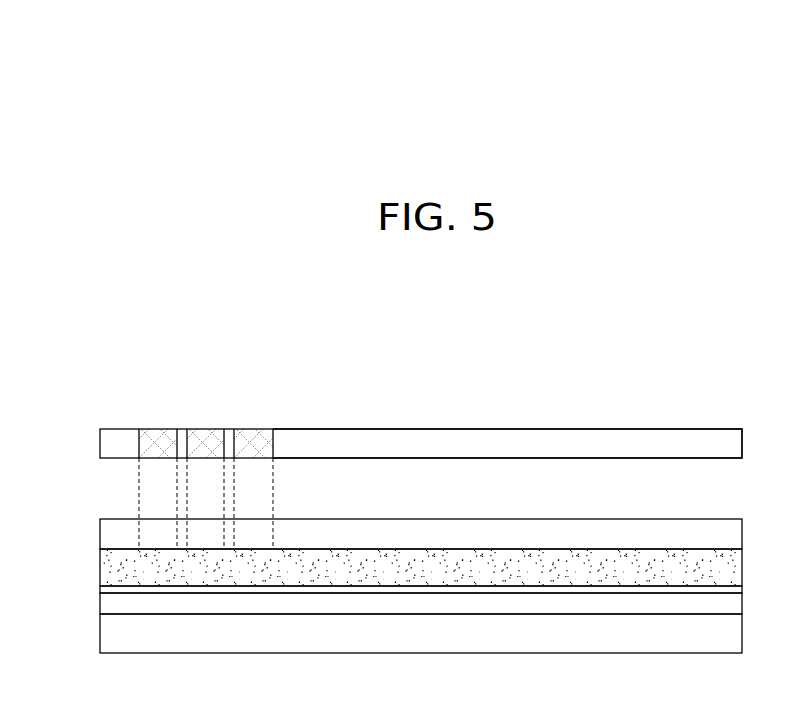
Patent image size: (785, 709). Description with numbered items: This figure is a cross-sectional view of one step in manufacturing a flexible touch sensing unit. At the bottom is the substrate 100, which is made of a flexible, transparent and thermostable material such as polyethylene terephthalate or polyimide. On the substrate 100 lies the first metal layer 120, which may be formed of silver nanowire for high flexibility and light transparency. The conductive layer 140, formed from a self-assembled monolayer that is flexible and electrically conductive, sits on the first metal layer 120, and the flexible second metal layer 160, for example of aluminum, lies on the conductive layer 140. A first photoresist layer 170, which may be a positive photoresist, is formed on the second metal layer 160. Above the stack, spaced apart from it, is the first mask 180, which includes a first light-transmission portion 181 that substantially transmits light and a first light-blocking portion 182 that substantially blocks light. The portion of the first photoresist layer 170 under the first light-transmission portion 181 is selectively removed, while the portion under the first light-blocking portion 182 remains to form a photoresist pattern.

The substrate 100 is at (100, 635).
The first metal layer 120 is at (100, 607).
The conductive layer 140 is at (100, 590).
The second metal layer 160 is at (100, 567).
The first photoresist layer 170 is at (100, 534).
The first mask 180 is at (100, 444).
The first light-transmission portion 181 is at (538, 438).
The first light-blocking portion 182 is at (245, 436).